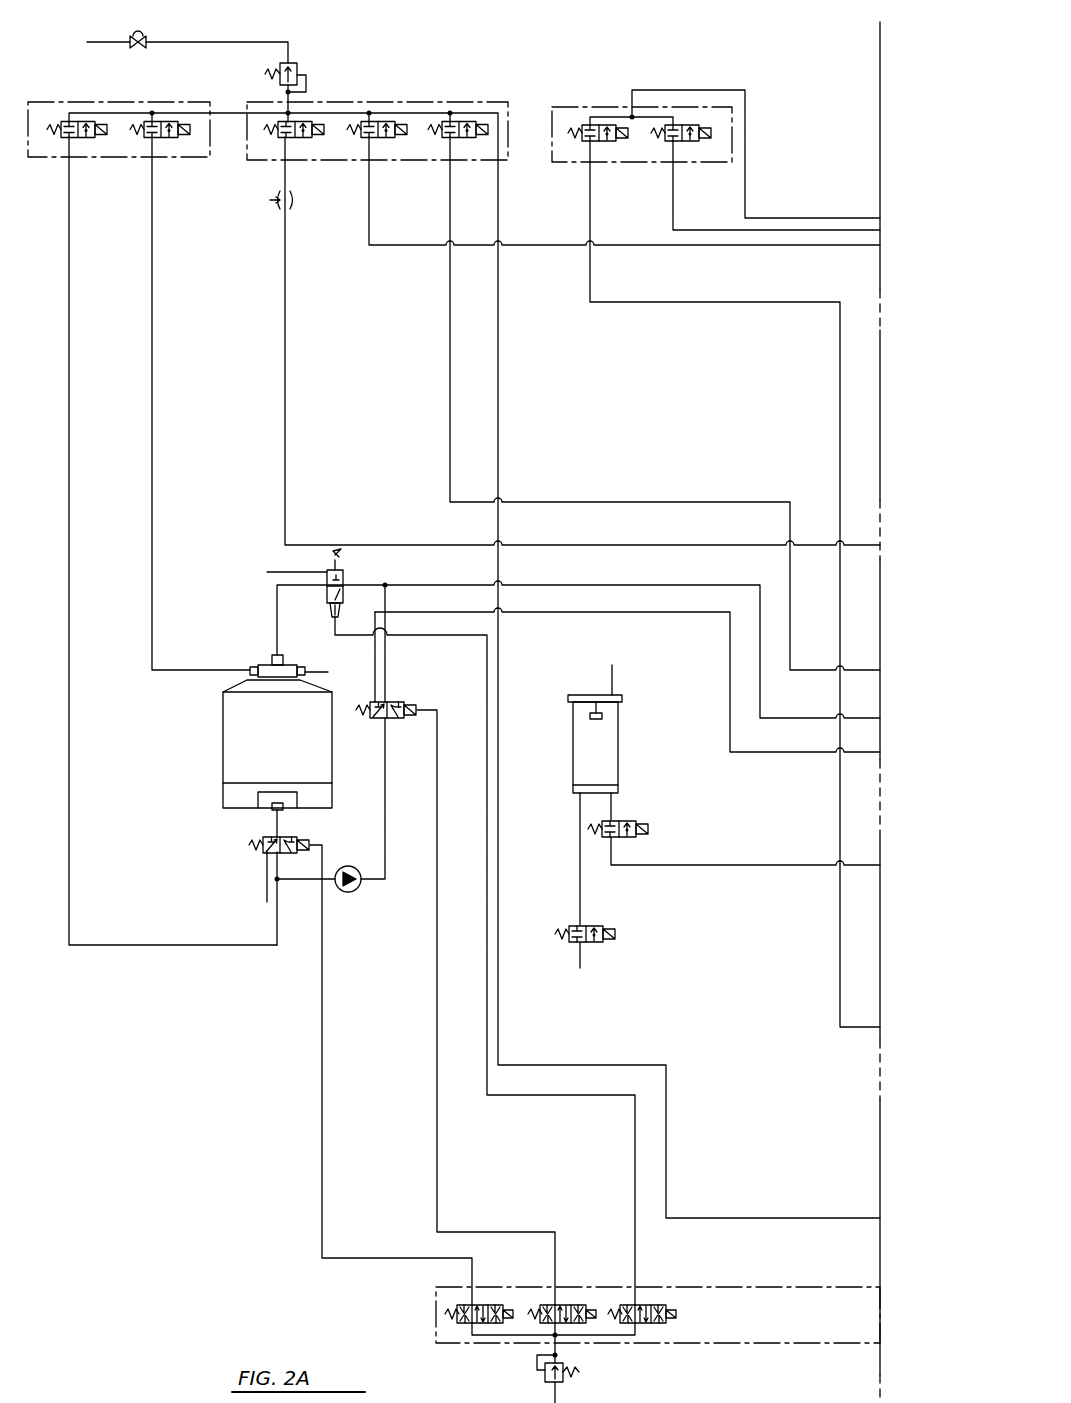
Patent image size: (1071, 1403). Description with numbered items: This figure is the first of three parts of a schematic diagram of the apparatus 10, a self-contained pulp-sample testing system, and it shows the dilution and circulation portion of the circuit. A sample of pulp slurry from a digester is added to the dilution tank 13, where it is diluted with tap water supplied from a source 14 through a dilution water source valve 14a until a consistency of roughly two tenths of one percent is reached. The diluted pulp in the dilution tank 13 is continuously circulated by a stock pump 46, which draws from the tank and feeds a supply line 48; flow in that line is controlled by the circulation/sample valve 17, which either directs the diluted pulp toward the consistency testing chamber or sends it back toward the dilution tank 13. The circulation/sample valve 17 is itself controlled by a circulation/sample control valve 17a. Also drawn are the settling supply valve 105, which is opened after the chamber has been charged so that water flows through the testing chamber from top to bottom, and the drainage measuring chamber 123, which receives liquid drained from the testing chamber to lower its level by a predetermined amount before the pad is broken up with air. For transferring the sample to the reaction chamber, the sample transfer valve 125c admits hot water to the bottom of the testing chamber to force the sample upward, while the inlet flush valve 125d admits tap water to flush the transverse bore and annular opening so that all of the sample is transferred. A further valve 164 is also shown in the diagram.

The source of tap water 14 is at (112, 16).
The dilution water source valve 14a is at (165, 138).
The settling supply valve 105 is at (302, 138).
The inlet flush valve 125d is at (467, 124).
The sample transfer valve 125c is at (580, 124).
The apparatus 10 is at (656, 78).
The solenoid valve 164 is at (688, 141).
The supply line 48 is at (640, 614).
The drainage measuring chamber 123 is at (614, 758).
The dilution tank 13 is at (228, 752).
The circulation/sample valve 17 is at (394, 718).
The stock pump 46 is at (352, 892).
The circulation/sample control valve 17a is at (564, 1305).